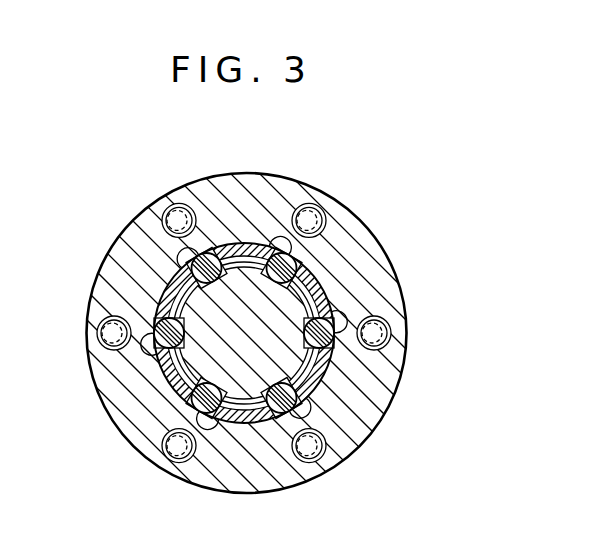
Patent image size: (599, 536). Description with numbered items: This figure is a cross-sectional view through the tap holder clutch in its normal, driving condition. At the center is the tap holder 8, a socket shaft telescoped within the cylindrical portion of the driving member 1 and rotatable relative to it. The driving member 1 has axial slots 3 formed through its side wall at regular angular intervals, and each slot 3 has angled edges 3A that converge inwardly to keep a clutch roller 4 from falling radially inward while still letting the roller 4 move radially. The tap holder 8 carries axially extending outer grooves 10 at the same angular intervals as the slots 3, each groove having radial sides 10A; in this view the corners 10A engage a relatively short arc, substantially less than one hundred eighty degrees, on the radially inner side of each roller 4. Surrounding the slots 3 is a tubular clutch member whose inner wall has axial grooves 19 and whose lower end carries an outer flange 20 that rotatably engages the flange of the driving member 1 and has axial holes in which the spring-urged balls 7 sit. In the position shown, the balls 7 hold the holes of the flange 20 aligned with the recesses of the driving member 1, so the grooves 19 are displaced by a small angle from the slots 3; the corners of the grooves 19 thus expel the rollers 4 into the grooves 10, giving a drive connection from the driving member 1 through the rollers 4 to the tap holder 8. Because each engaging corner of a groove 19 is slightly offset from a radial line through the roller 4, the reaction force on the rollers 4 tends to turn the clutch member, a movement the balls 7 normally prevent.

The driving member 1 is at (322, 366).
The axial slot 3 is at (163, 321).
The angled edge 3A is at (185, 410).
The clutch roller 4 is at (296, 263).
The ball 7 is at (314, 201).
The tap holder 8 is at (254, 346).
The outer groove 10 is at (185, 278).
The radial side 10A is at (247, 242).
The axial groove 19 is at (347, 325).
The outer flange 20 is at (370, 392).